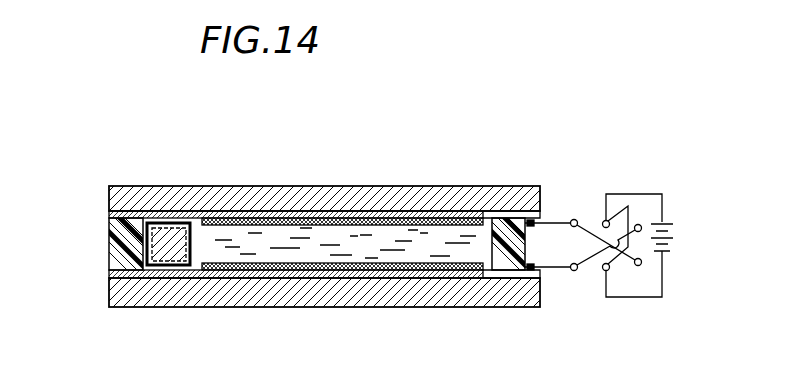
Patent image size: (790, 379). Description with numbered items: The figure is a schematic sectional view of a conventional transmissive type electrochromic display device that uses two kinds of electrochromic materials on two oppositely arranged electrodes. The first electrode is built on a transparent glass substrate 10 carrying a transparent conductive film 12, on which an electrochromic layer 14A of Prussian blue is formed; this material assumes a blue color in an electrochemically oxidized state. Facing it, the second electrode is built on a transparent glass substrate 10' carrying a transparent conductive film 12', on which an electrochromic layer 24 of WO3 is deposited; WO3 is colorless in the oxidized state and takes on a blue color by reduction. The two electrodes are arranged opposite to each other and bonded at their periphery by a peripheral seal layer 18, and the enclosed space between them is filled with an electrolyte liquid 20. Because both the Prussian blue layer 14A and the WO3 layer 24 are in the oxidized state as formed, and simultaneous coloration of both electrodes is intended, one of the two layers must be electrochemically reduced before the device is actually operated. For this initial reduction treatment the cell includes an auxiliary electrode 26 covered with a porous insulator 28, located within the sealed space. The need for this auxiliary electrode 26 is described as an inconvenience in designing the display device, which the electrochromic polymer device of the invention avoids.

The transparent glass substrate 10 is at (324, 185).
The transparent glass substrate 10' is at (324, 304).
The transparent conductive film 12 is at (126, 226).
The transparent conductive film 12' is at (516, 276).
The electrochromic layer 14A is at (322, 222).
The electrochromic layer 24 is at (345, 272).
The peripheral seal layer 18 is at (123, 250).
The electrolyte liquid 20 is at (415, 233).
The auxiliary electrode 26 is at (158, 270).
The porous insulator 28 is at (183, 262).